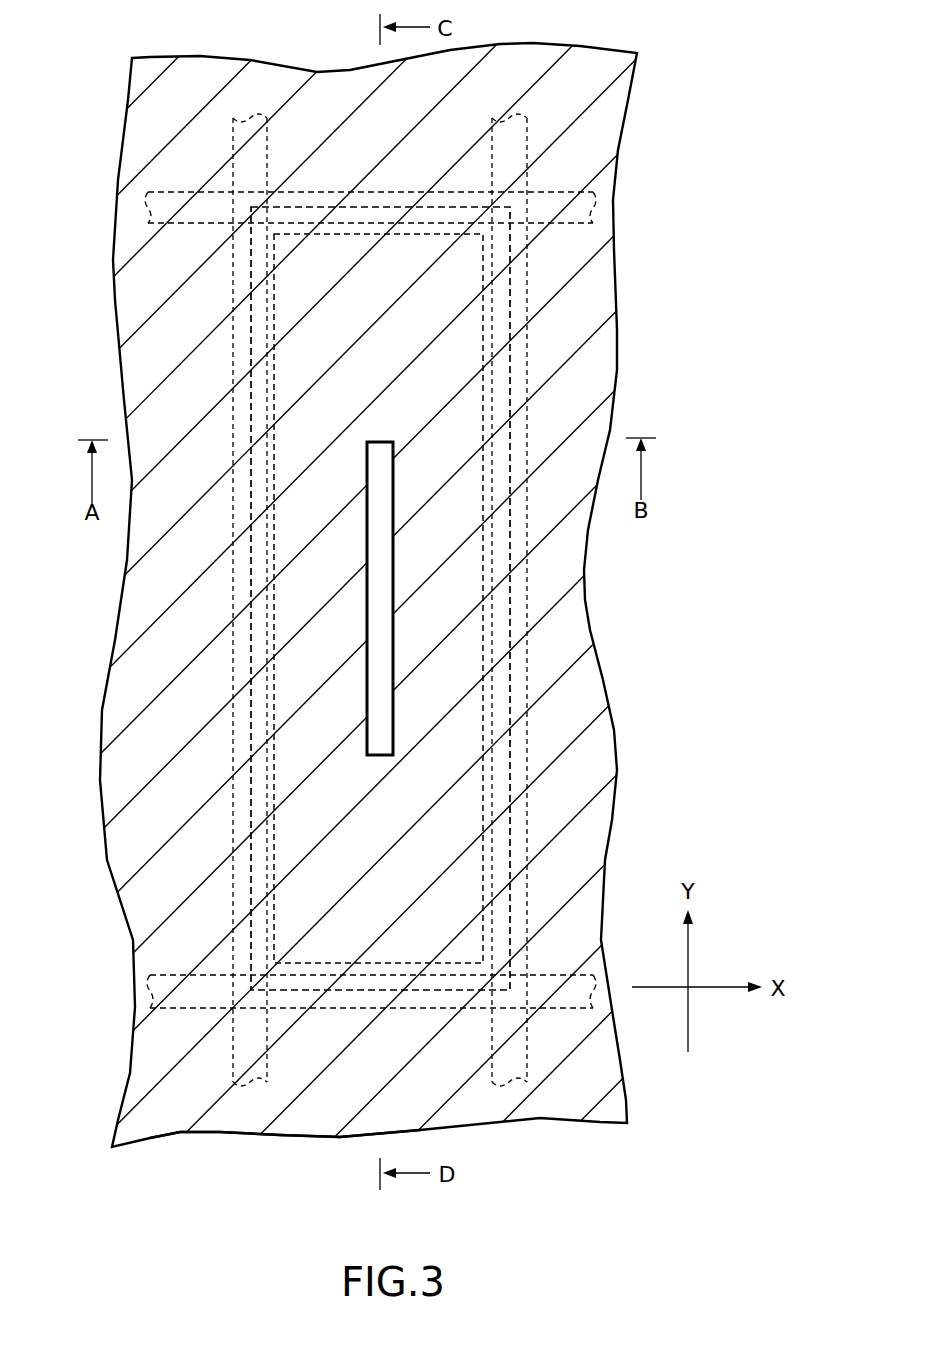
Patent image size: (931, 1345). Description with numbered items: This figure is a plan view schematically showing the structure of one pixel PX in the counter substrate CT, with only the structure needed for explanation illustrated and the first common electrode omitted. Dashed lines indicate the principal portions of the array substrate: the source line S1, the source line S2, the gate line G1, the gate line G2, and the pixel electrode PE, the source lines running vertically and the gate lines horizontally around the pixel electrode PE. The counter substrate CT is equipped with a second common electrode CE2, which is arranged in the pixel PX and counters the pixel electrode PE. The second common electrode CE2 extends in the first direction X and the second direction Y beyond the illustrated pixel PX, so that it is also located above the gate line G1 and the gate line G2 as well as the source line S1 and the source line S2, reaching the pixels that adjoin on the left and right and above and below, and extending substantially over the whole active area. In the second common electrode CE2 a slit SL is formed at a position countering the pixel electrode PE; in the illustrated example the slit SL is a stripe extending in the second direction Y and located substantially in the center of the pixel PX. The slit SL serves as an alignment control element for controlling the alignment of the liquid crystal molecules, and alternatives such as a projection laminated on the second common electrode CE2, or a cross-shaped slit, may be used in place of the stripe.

The counter substrate CT is at (666, 131).
The source line S1 is at (241, 112).
The source line S2 is at (501, 112).
The gate line G1 is at (148, 210).
The gate line G2 is at (150, 990).
The pixel PX is at (517, 200).
The pixel electrode PE is at (500, 328).
The slit SL is at (358, 462).
The second common electrode CE2 is at (278, 1139).